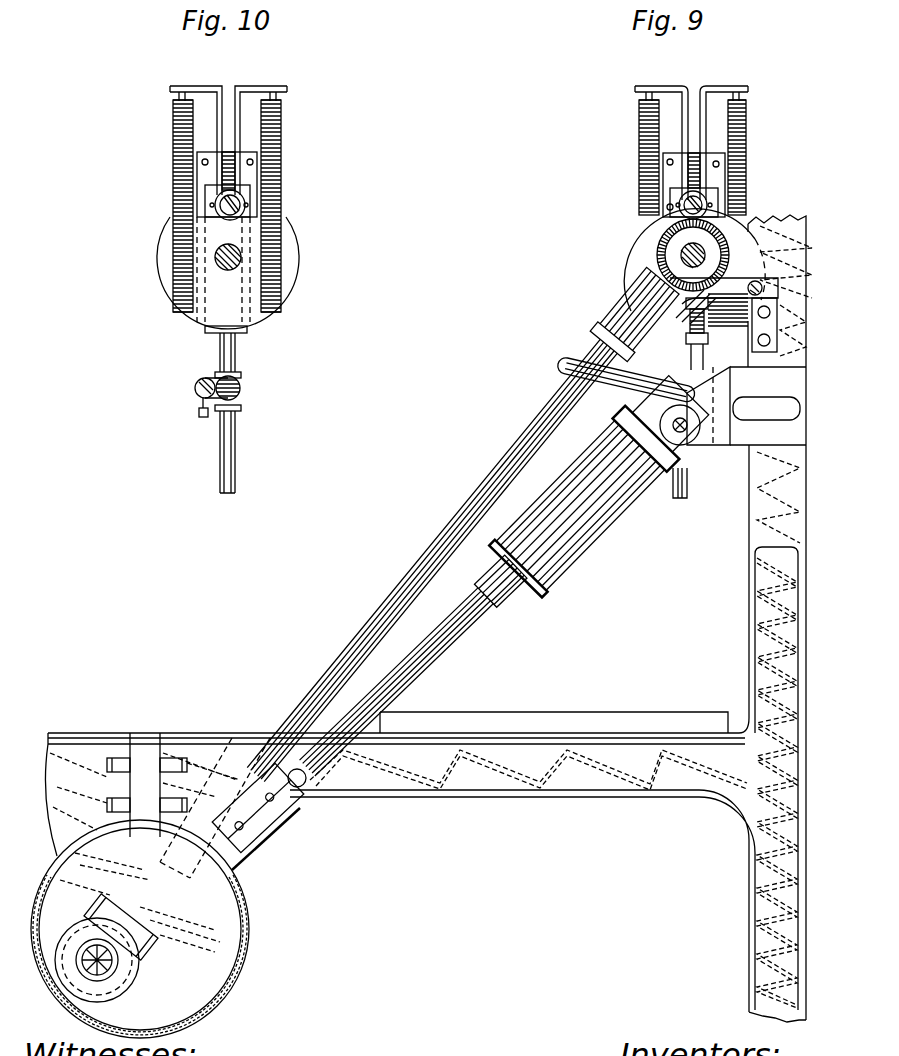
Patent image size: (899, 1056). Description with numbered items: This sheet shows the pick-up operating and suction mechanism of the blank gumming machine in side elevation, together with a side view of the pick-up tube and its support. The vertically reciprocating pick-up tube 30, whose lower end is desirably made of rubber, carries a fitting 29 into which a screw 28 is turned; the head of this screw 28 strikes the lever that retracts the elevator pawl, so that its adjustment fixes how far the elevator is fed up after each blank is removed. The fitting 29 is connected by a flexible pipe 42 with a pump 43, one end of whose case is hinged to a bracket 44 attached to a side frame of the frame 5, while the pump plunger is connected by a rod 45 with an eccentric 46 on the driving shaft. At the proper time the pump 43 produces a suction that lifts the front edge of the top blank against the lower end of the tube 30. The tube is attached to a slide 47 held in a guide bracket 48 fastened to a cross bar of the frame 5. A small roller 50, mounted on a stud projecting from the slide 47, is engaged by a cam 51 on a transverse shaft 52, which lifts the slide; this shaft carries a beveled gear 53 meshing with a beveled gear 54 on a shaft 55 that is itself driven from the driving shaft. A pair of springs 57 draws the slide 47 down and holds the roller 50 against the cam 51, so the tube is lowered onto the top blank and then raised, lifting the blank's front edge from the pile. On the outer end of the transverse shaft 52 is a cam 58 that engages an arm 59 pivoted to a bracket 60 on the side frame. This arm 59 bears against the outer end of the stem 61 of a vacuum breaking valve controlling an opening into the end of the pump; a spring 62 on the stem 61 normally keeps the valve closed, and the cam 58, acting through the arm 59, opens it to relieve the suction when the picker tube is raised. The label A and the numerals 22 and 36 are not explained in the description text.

In FIG. 9, the frame 5 is at (425, 694).
In FIG. 9, the plate A is at (608, 711).
In FIG. 9, the shaft hub 22 is at (90, 912).
In FIG. 10, the screw 28 is at (200, 410).
In FIG. 10, the fitting 29 is at (242, 386).
In FIG. 9, the fitting 29 is at (700, 336).
In FIG. 10, the pick-up tube 30 is at (236, 445).
In FIG. 9, the pick-up tube 30 is at (679, 500).
In FIG. 9, the clamp block 36 is at (142, 946).
In FIG. 9, the flexible pipe 42 is at (558, 368).
In FIG. 9, the pump 43 is at (592, 562).
In FIG. 9, the bracket 44 is at (718, 448).
In FIG. 9, the rod 45 is at (442, 654).
In FIG. 9, the eccentric 46 is at (244, 906).
In FIG. 10, the slide 47 is at (240, 186).
In FIG. 9, the slide 47 is at (704, 188).
In FIG. 10, the guide bracket 48 is at (258, 158).
In FIG. 9, the guide bracket 48 is at (726, 168).
In FIG. 10, the roller 50 is at (205, 205).
In FIG. 9, the roller 50 is at (670, 204).
In FIG. 10, the cam 51 is at (300, 258).
In FIG. 9, the cam 51 is at (622, 268).
In FIG. 10, the transverse shaft 52 is at (216, 257).
In FIG. 9, the transverse shaft 52 is at (682, 256).
In FIG. 9, the beveled gear 53 is at (750, 238).
In FIG. 9, the beveled gear 54 is at (670, 276).
In FIG. 9, the shaft 55 is at (354, 628).
In FIG. 10, the springs 57 is at (172, 124).
In FIG. 9, the springs 57 is at (640, 128).
In FIG. 9, the cam 58 is at (674, 230).
In FIG. 9, the arm 59 is at (640, 296).
In FIG. 9, the bracket 60 is at (777, 326).
In FIG. 9, the stem 61 is at (708, 310).
In FIG. 9, the spring 62 is at (708, 340).